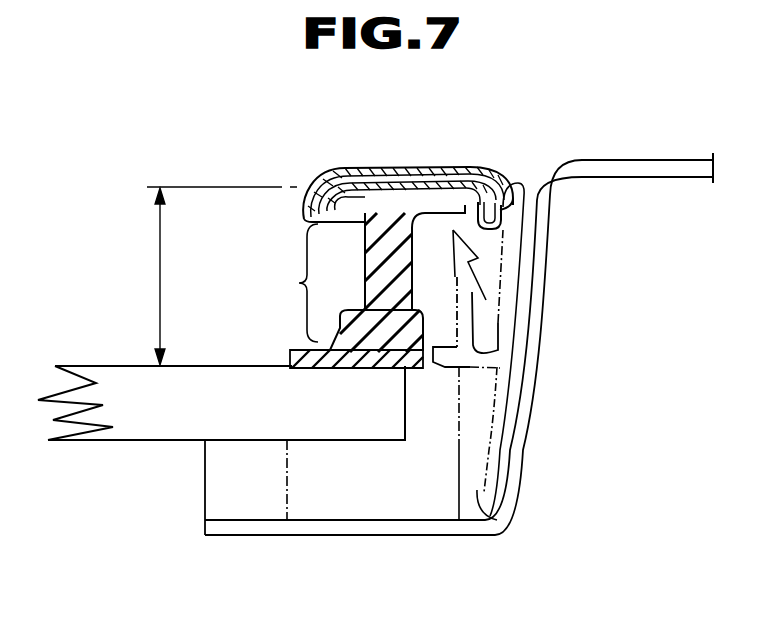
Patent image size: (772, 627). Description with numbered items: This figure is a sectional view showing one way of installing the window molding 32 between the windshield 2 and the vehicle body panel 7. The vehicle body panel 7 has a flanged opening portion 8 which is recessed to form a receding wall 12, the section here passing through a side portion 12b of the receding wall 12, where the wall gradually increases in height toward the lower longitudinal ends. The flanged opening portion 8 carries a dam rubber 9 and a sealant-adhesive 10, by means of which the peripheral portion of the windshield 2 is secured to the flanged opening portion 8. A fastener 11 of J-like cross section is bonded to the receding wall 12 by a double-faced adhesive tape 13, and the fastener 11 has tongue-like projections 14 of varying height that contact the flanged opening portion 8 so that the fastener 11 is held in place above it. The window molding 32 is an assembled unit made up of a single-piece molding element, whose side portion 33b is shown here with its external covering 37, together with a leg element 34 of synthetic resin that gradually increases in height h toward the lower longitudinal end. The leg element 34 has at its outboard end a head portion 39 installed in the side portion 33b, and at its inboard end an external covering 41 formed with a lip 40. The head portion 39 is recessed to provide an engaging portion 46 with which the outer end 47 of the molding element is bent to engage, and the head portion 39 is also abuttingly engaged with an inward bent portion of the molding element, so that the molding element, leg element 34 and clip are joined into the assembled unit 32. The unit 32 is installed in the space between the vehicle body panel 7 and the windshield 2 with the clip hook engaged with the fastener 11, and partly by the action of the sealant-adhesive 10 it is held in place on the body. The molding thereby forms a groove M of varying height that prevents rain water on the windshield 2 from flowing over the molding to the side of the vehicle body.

The windshield 2 is at (100, 366).
The vehicle body panel 7 is at (624, 160).
The flanged opening portion 8 is at (238, 537).
The dam rubber 9 is at (220, 492).
The sealant-adhesive 10 is at (355, 495).
The fastener 11 is at (505, 371).
The receding wall 12 is at (530, 326).
The side portion of the receding wall 12b is at (524, 478).
The double-faced adhesive tape 13 is at (530, 266).
The tongue-like projection 14 is at (484, 492).
The window molding 32 is at (200, 150).
The side portion of the molding element 33b is at (447, 166).
The leg element 34 is at (388, 213).
The external covering 37 is at (491, 172).
The head portion of the leg element 39 is at (330, 182).
The lip 40 is at (293, 362).
The external covering of the leg element 41 is at (424, 352).
The engaging portion 46 is at (514, 160).
The outer end of the molding element 47 is at (515, 238).
The height h is at (222, 276).
The groove M is at (294, 283).